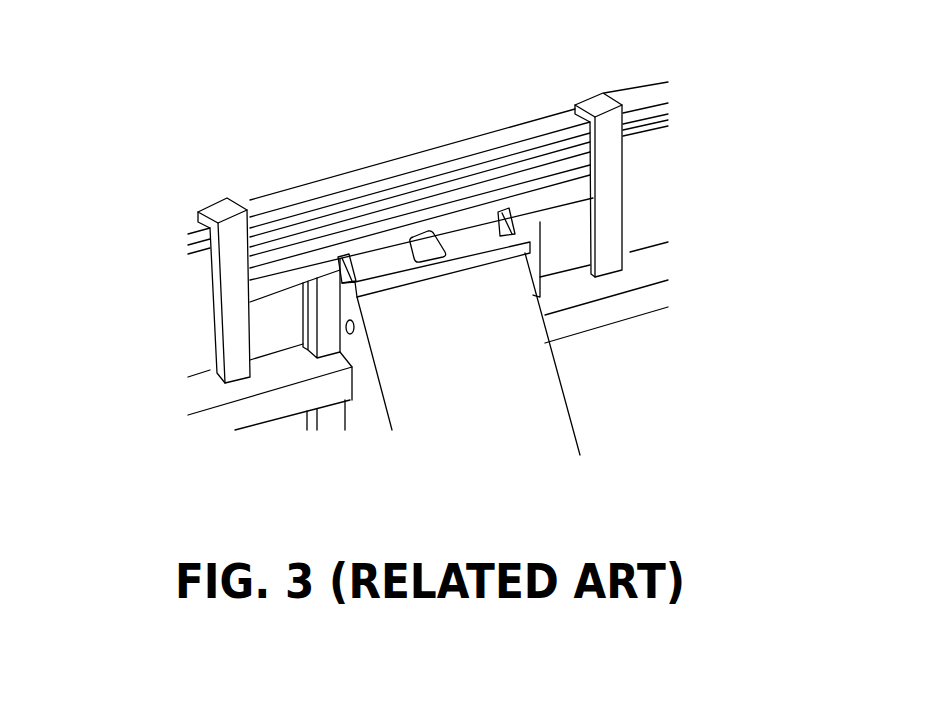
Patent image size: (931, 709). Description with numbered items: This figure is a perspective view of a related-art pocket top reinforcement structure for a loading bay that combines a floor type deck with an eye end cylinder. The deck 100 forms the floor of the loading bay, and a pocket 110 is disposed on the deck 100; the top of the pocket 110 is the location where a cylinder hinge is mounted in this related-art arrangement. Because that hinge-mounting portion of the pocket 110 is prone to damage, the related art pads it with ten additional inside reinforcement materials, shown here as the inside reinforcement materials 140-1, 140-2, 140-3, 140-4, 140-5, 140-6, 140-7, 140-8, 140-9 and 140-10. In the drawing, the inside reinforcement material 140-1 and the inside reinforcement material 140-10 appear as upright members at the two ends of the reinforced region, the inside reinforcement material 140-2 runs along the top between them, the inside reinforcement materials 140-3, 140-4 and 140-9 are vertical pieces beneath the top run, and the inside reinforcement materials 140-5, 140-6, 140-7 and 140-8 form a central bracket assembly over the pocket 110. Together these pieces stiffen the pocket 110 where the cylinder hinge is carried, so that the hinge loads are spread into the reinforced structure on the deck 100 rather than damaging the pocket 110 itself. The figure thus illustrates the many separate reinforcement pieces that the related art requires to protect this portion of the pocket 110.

The deck 100 is at (633, 350).
The pocket 110 is at (537, 375).
The inside reinforcement material 140-1 is at (235, 253).
The inside reinforcement material 140-2 is at (285, 215).
The inside reinforcement material 140-3 is at (270, 281).
The inside reinforcement material 140-4 is at (325, 345).
The inside reinforcement material 140-5 is at (341, 262).
The inside reinforcement material 140-6 is at (429, 240).
The inside reinforcement material 140-7 is at (495, 218).
The inside reinforcement material 140-8 is at (389, 276).
The inside reinforcement material 140-9 is at (530, 233).
The inside reinforcement material 140-10 is at (617, 158).